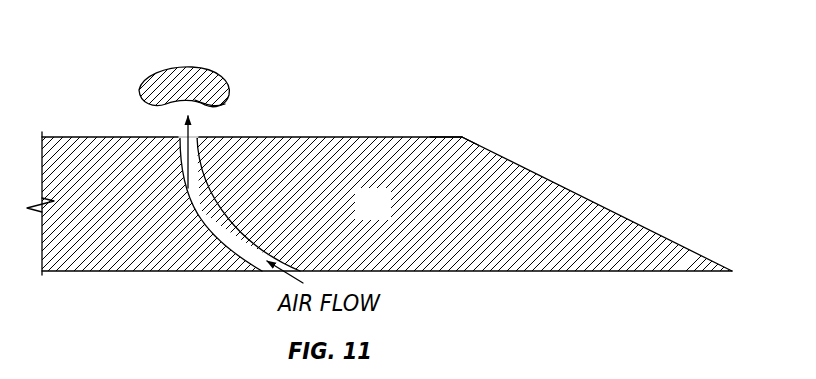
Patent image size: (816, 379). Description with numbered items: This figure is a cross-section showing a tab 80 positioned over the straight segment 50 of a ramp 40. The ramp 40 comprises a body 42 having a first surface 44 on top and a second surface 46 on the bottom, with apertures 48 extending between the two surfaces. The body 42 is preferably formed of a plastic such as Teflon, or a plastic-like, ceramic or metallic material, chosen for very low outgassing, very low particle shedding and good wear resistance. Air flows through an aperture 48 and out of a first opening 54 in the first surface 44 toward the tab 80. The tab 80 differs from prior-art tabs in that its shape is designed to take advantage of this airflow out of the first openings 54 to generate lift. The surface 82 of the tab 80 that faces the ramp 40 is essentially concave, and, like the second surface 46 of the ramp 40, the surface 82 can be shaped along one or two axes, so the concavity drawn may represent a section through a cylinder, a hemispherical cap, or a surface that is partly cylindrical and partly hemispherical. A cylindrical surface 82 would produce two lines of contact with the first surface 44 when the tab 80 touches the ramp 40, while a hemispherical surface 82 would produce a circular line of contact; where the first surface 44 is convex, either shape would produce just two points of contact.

The ramp 40 is at (528, 168).
The body 42 is at (390, 215).
The first surface 44 is at (320, 137).
The second surface 46 is at (465, 271).
The apertures 48 is at (217, 226).
The straight segment 50 is at (415, 137).
The first openings 54 is at (180, 134).
The tab 80 is at (151, 67).
The surface 82 is at (209, 110).